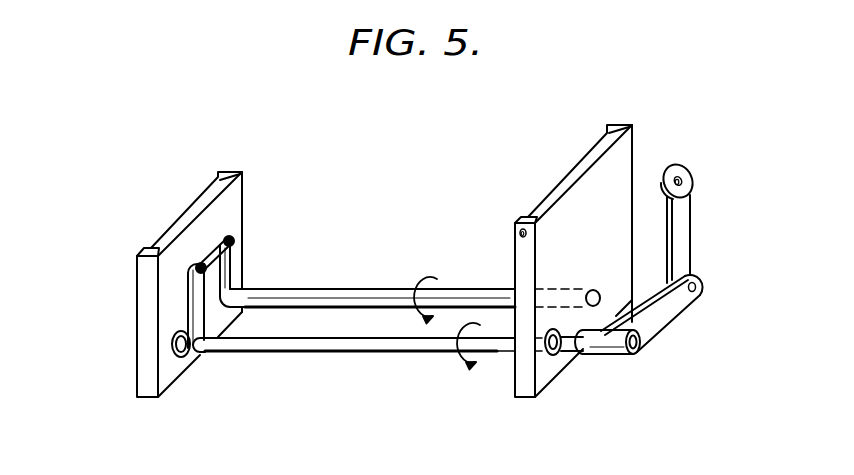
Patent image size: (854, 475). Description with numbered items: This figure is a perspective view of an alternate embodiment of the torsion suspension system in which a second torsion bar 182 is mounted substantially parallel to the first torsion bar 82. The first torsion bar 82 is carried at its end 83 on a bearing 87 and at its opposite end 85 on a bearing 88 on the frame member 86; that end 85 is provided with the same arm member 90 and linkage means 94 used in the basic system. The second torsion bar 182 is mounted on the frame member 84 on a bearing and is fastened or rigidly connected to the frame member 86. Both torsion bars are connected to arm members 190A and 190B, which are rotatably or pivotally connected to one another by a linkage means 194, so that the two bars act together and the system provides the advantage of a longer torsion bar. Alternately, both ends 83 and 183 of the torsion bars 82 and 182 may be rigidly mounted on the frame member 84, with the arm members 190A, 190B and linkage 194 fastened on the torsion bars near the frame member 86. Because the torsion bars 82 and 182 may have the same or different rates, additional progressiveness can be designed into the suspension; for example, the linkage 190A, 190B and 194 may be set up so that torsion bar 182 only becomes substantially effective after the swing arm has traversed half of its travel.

The first torsion bar 82 is at (357, 353).
The second torsion bar 182 is at (364, 290).
The end 83 is at (201, 352).
The frame member 84 is at (146, 277).
The end 85 is at (594, 290).
The frame member 86 is at (527, 384).
The bearing 87 is at (183, 356).
The bearing 88 is at (551, 356).
The arm member 90 is at (662, 317).
The linkage means 94 is at (681, 230).
The end 183 is at (234, 294).
The arm member 190A is at (188, 307).
The arm member 190B is at (230, 260).
The linkage means 194 is at (207, 259).